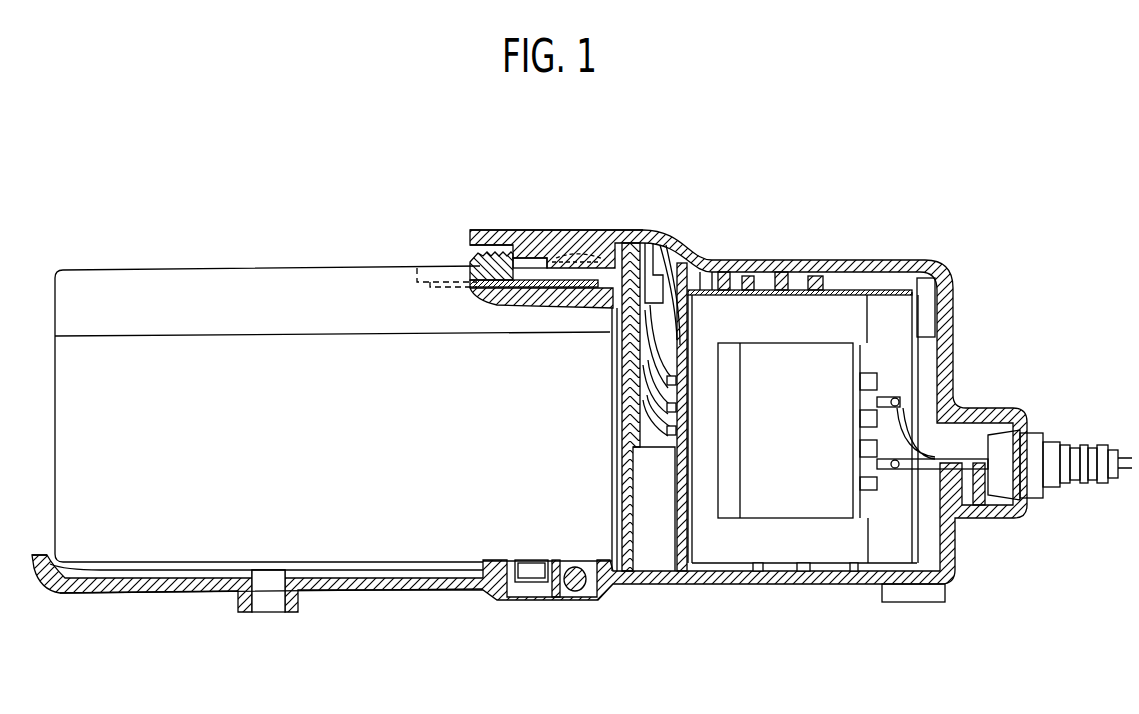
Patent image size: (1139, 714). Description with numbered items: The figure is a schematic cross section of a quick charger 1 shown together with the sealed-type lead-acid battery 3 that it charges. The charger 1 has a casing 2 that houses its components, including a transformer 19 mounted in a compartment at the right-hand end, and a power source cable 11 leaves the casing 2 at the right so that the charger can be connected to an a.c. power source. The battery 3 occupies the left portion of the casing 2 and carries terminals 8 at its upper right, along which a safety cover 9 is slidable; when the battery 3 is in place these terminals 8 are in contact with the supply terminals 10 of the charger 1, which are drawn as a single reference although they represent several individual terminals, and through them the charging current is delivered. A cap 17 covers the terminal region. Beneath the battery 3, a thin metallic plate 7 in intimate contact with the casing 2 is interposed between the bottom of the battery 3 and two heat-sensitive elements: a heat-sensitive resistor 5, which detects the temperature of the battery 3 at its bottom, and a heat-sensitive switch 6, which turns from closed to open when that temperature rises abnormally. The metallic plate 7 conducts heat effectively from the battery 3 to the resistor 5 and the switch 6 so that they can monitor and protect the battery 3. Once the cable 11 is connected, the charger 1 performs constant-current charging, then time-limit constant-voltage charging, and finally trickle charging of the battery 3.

The quick charger 1 is at (466, 598).
The casing 2 is at (846, 259).
The battery 3 is at (171, 268).
The heat-sensitive resistor 5 is at (576, 592).
The heat-sensitive switch 6 is at (532, 575).
The thin metallic plate 7 is at (556, 560).
The terminals 8 is at (542, 288).
The safety cover 9 is at (480, 258).
The supply terminals 10 is at (597, 282).
The power source cable 11 is at (1073, 477).
The cap 17 is at (517, 247).
The transformer 19 is at (827, 553).